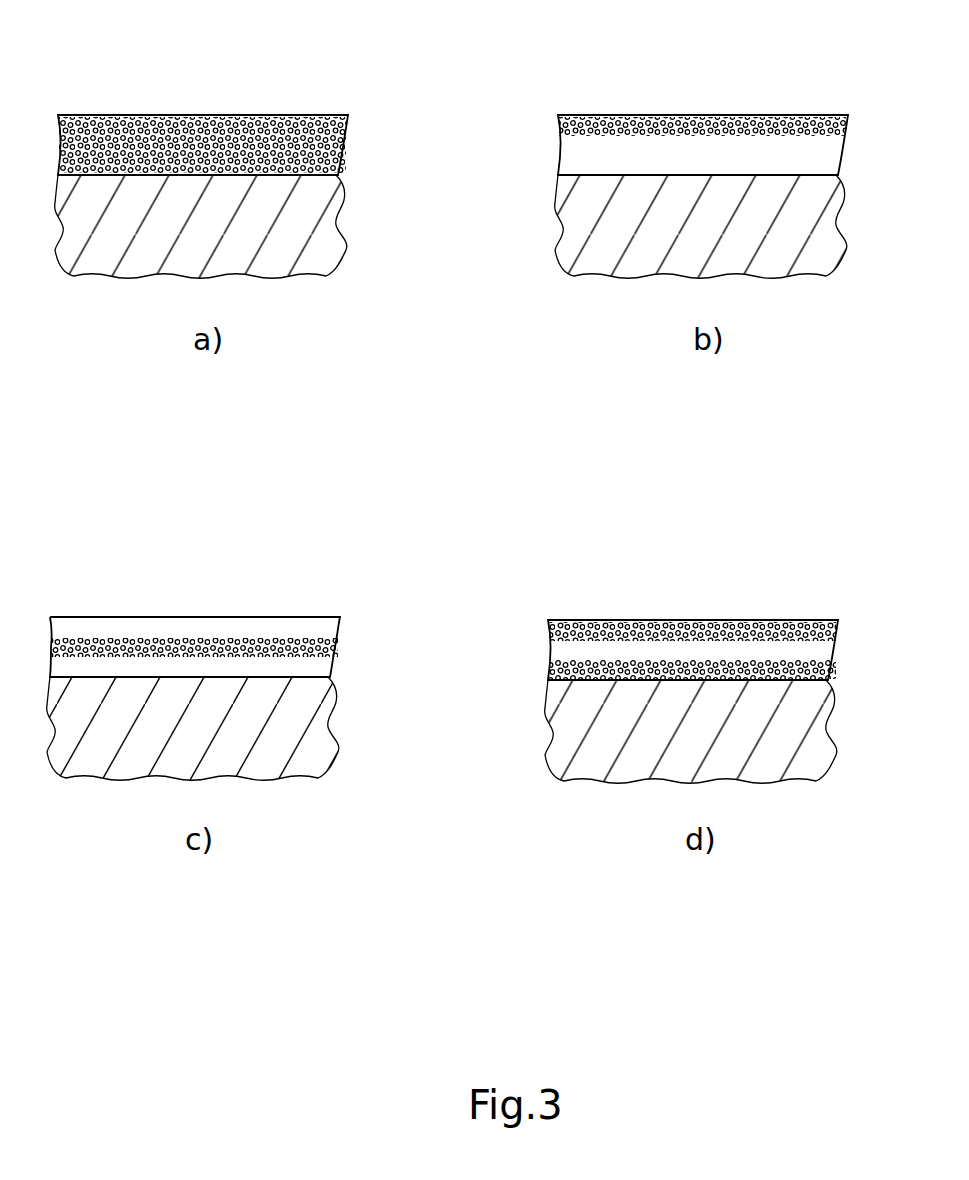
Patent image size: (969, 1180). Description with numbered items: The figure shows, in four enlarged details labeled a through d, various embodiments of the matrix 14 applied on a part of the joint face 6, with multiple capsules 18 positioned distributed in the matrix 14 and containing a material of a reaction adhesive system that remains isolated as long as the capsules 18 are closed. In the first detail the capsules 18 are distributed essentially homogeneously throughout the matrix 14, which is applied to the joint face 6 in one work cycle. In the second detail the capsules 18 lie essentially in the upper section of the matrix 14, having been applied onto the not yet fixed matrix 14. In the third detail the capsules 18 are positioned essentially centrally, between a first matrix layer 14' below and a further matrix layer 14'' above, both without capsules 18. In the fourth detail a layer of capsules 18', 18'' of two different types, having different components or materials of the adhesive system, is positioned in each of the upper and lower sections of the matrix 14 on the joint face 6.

The joint face 6 is at (310, 228).
The matrix 14 is at (483, 396).
The first matrix layer 14' is at (192, 613).
The further matrix layer 14'' is at (195, 598).
The capsules 18 is at (448, 349).
The first type of capsules 18' is at (692, 614).
The second type of capsules 18'' is at (692, 595).